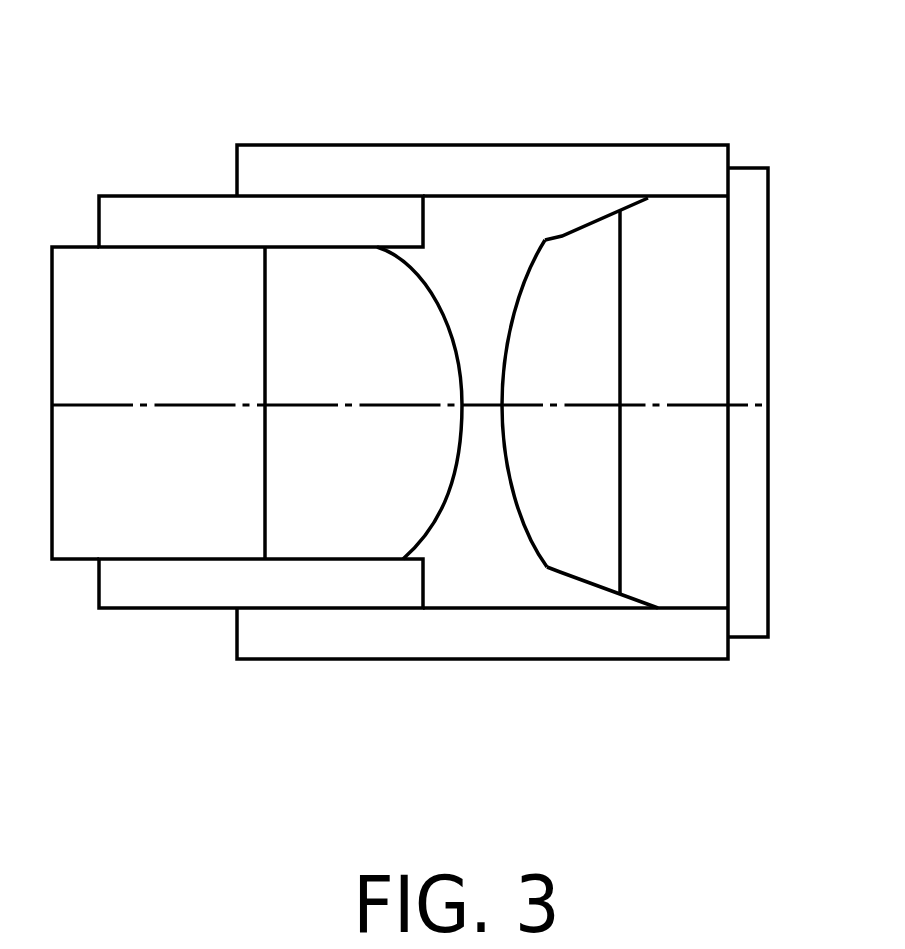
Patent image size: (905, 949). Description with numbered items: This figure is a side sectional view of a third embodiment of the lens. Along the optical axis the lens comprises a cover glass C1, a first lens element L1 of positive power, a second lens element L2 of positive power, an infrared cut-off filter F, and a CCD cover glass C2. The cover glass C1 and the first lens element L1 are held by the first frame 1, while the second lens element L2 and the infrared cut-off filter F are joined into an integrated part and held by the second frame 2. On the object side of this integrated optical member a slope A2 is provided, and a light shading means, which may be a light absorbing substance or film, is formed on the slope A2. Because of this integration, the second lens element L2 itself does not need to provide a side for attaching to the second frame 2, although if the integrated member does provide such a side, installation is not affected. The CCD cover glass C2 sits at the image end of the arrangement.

The first frame 1 is at (141, 207).
The second frame 2 is at (325, 163).
The slope A2 is at (554, 233).
The cover glass C1 is at (73, 537).
The CCD cover glass C2 is at (755, 597).
The first lens element L1 is at (308, 537).
The second lens element L2 is at (580, 375).
The infrared cut-off filter F is at (672, 575).